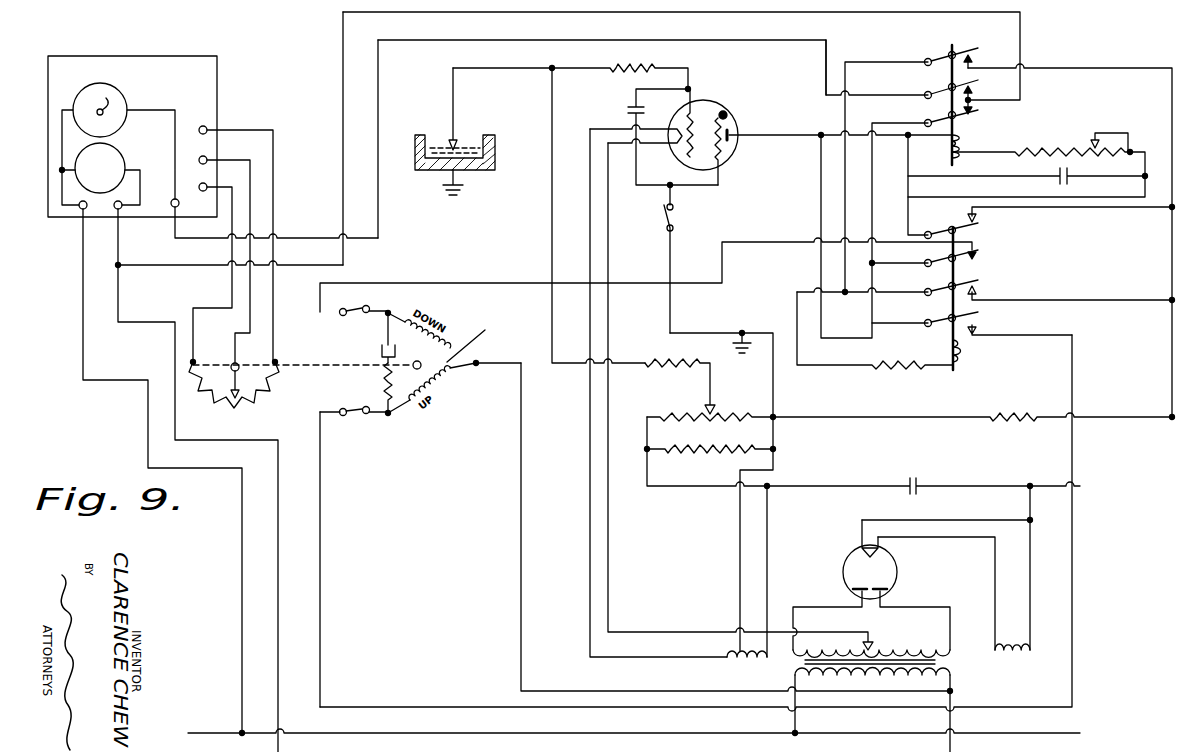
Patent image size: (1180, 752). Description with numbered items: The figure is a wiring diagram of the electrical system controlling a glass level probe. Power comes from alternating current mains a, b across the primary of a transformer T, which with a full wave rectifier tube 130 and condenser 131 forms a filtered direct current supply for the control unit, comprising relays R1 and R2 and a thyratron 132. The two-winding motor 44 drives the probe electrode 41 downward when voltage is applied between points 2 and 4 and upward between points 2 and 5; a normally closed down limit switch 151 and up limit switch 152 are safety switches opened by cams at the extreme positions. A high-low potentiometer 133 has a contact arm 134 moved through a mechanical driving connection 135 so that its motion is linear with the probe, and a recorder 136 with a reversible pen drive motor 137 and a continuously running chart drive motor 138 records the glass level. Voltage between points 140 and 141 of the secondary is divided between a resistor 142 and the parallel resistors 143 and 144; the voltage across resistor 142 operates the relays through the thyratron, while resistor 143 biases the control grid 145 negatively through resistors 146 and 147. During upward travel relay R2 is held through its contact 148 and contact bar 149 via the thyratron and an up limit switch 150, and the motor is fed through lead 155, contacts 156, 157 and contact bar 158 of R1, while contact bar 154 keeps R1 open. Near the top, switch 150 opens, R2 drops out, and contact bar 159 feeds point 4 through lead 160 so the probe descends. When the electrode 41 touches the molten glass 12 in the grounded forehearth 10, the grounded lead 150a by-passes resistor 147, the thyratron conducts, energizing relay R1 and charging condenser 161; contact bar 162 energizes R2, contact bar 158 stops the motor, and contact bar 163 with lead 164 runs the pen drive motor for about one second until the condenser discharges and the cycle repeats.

The forehearth 10 is at (503, 162).
The molten glass 12 is at (478, 148).
The probe electrode 41 is at (458, 138).
The full wave rectifier tube 130 is at (897, 574).
The condenser 131 is at (950, 470).
The thyratron 132 is at (737, 127).
The high-low potentiometer 133 is at (210, 403).
The contact arm 134 is at (246, 380).
The mechanical driving connection 135 is at (328, 364).
The recorder 136 is at (228, 40).
The pen drive motor 137 is at (94, 87).
The chart drive motor 138 is at (100, 168).
The transformer secondary point 140 is at (768, 486).
The transformer secondary point 141 is at (1038, 470).
The resistor 142 is at (1030, 401).
The resistor 143 is at (690, 416).
The resistor 144 is at (718, 457).
The control grid 145 is at (690, 120).
The resistor 146 is at (617, 76).
The resistor 147 is at (705, 350).
The contact 148 is at (975, 297).
The contact bar 149 is at (950, 286).
The up limit switch 150 is at (672, 212).
The grounded lead 150a is at (742, 333).
The down limit switch 151 is at (368, 296).
The up limit switch 152 is at (366, 407).
The contact bar 154 is at (956, 228).
The lead 155 is at (322, 517).
The contact 156 is at (978, 331).
The contact 157 is at (950, 320).
The contact bar 158 is at (980, 112).
The contact bar 159 is at (950, 260).
The lead 160 is at (502, 284).
The condenser 161 is at (1067, 177).
The contact bar 162 is at (975, 42).
The contact bar 163 is at (928, 92).
The lead 164 is at (826, 68).
The relay R1 is at (960, 152).
The relay R2 is at (960, 350).
The transformer T is at (883, 701).
The motor point 2 is at (478, 362).
The motor point 4 is at (388, 313).
The motor point 5 is at (388, 416).
The motor 44 is at (470, 343).
The main a is at (432, 727).
The main b is at (482, 751).